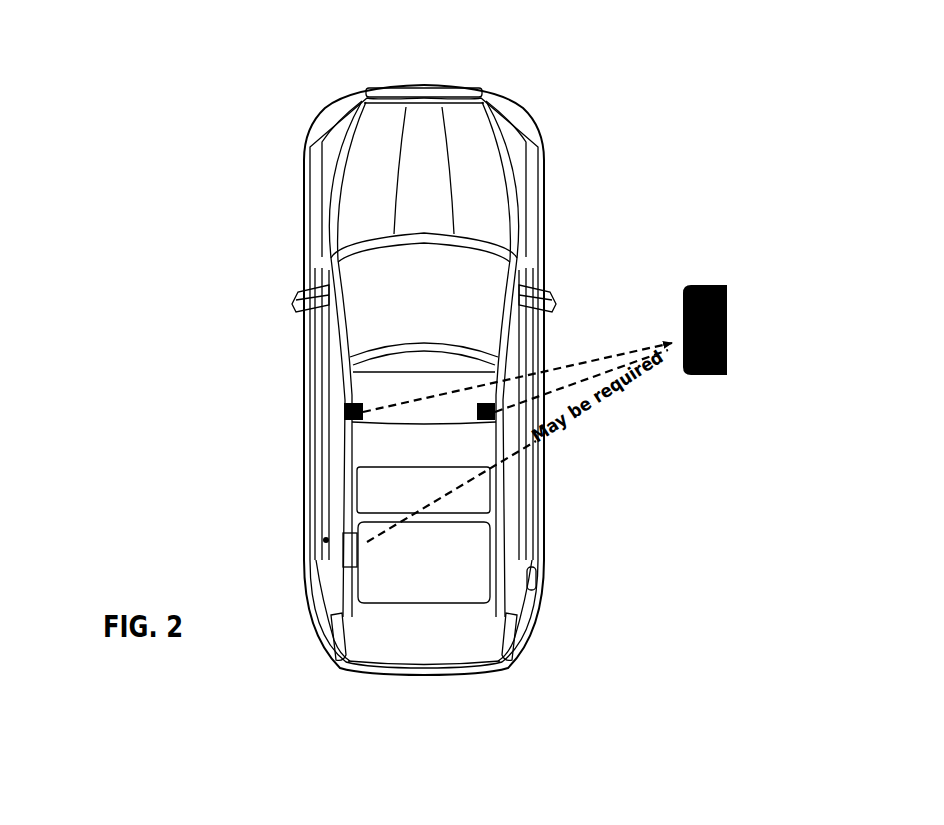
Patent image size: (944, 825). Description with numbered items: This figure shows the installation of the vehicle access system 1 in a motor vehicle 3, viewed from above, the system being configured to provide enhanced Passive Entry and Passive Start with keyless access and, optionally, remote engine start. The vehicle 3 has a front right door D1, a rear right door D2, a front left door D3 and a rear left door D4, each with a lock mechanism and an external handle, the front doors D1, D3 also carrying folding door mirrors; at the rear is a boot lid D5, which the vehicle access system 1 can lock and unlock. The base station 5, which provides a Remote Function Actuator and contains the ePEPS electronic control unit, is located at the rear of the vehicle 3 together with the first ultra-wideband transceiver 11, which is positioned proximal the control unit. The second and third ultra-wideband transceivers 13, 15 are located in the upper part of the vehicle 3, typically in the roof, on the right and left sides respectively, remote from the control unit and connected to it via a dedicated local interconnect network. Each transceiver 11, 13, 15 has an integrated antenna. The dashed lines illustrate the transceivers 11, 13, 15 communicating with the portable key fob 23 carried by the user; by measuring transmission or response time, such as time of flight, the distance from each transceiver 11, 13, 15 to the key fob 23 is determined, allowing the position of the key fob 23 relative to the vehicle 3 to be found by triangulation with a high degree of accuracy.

The vehicle access system 1 is at (220, 55).
The vehicle 3 is at (347, 192).
The base station 5 is at (324, 538).
The first ultra-wideband transceiver 11 is at (347, 557).
The second ultra-wideband transceiver 13 is at (494, 415).
The third ultra-wideband transceiver 15 is at (344, 410).
The key fob 23 is at (713, 285).
The front right door D1 is at (530, 357).
The rear right door D2 is at (530, 478).
The front left door D3 is at (320, 360).
The rear left door D4 is at (317, 438).
The boot lid D5 is at (423, 633).